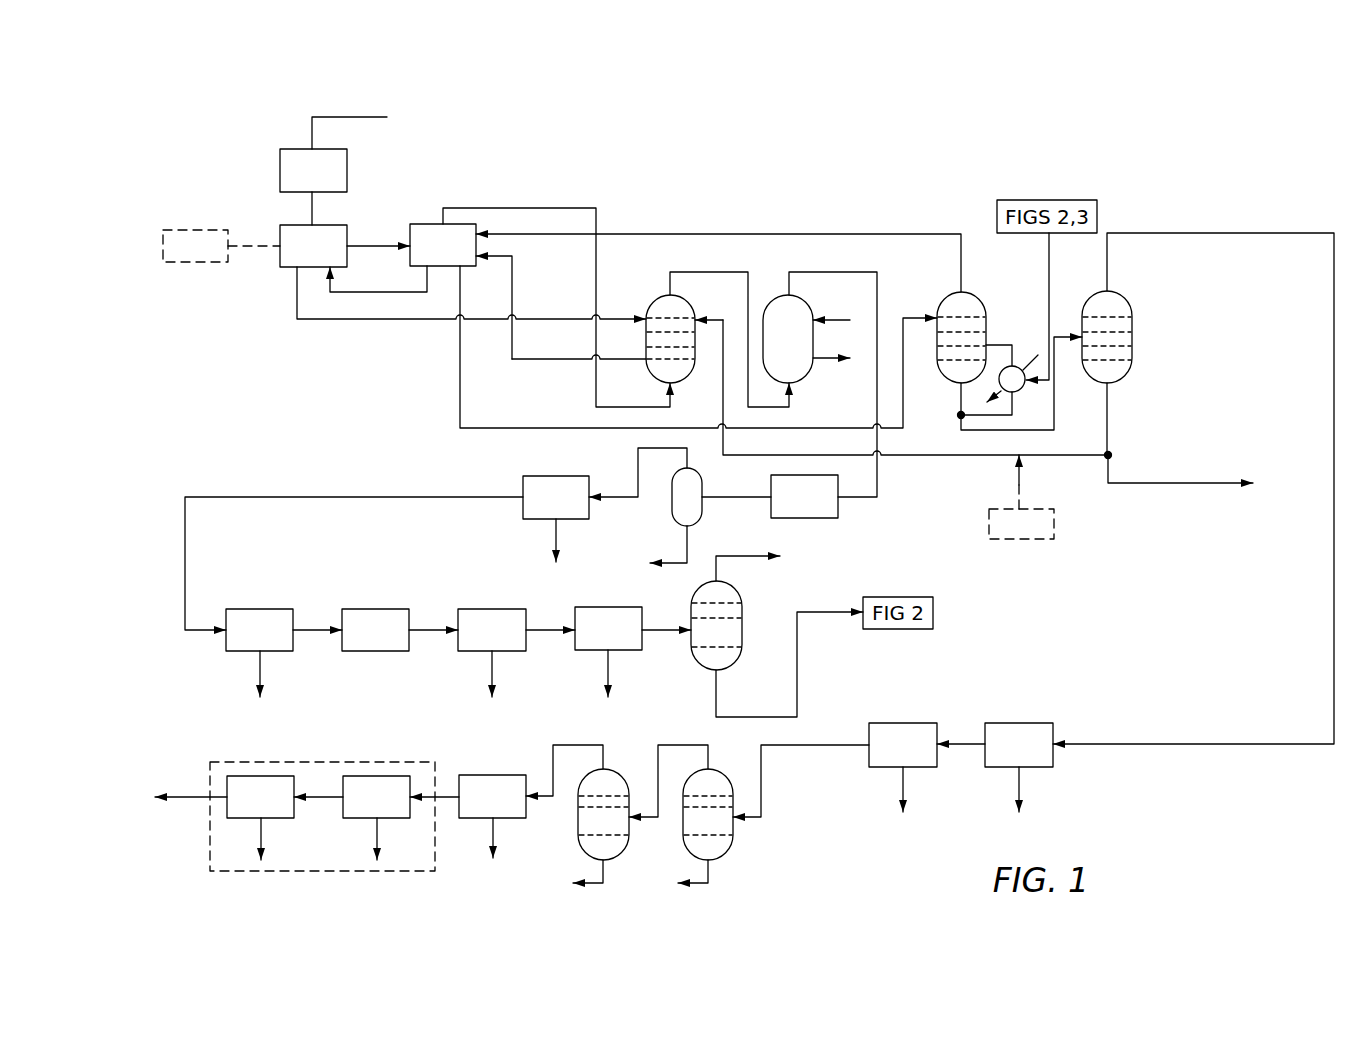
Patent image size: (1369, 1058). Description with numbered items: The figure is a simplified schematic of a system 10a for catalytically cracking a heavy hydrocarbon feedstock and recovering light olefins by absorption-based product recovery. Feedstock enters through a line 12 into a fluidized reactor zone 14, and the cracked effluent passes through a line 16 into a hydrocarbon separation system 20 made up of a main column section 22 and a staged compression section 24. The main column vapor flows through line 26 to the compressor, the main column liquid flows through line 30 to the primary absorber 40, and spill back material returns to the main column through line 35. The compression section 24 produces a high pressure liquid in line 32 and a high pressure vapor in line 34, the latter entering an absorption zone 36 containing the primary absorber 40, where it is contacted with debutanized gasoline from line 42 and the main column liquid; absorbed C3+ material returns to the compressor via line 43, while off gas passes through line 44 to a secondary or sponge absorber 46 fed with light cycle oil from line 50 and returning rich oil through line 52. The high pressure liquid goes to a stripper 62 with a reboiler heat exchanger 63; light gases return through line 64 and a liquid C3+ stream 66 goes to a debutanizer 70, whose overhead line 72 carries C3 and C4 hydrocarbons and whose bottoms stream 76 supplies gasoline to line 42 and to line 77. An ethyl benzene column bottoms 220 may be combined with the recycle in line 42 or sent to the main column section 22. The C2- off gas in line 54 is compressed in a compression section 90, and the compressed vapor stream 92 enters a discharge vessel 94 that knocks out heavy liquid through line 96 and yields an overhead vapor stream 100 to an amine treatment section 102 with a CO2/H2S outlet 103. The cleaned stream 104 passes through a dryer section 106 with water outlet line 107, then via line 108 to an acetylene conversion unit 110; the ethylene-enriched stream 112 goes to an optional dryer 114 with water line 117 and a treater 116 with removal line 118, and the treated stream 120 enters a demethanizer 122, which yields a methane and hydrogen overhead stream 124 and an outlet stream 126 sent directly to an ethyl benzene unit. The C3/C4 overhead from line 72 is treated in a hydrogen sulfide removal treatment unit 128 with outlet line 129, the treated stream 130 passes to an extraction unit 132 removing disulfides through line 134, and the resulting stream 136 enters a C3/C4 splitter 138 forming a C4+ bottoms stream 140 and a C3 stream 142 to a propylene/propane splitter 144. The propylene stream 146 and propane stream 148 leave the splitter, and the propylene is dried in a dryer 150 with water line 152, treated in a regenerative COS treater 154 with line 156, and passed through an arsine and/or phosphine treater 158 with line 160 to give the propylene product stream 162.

The system 10a is at (1236, 147).
The line 12 is at (363, 119).
The fluidized reactor zone 14 is at (313, 189).
The line 16 is at (316, 212).
The hydrocarbon separation system 20 is at (330, 357).
The main column section 22 is at (312, 262).
The staged compression section 24 is at (446, 262).
The line 26 is at (384, 244).
The line 30 is at (297, 308).
The line 32 is at (460, 354).
The line 34 is at (596, 389).
The line 35 is at (404, 290).
The absorption zone 36 is at (693, 200).
The primary absorber 40 is at (658, 357).
The line 42 is at (948, 459).
The line 43 is at (512, 357).
The line 44 is at (685, 270).
The secondary or sponge absorber 46 is at (776, 359).
The line 50 is at (838, 320).
The line 52 is at (840, 358).
The line 54 is at (803, 270).
The stripper 62 is at (949, 357).
The reboiler heat exchanger 63 is at (1019, 362).
The line 64 is at (782, 233).
The liquid C3+ stream 66 is at (1054, 412).
The debutanizer 70 is at (1095, 357).
The line 72 is at (1222, 233).
The bottoms stream 76 is at (1109, 416).
The line 77 is at (1180, 483).
The compression section 90 is at (792, 509).
The compressed vapor stream 92 is at (735, 502).
The discharge vessel 94 is at (676, 509).
The line 96 is at (687, 545).
The overhead vapor stream 100 is at (638, 449).
The amine treatment section 102 is at (538, 509).
The CO2/H2S outlet 103 is at (556, 538).
The stream 104 is at (352, 495).
The dryer section 106 is at (242, 643).
The water outlet line 107 is at (258, 669).
The line 108 is at (318, 628).
The acetylene conversion unit 110 is at (357, 643).
The ethylene-enriched process stream 112 is at (433, 628).
The dryer 114 is at (474, 643).
The treater 116 is at (590, 642).
The line 117 is at (490, 669).
The line 118 is at (606, 669).
The treated stream 120 is at (666, 627).
The demethanizer 122 is at (698, 643).
The overhead stream 124 is at (765, 556).
The demethanizer outlet stream 126 is at (800, 671).
The hydrogen sulfide removal treatment unit 128 is at (1001, 757).
The line 129 is at (1021, 782).
The treated stream 130 is at (964, 738).
The extraction unit 132 is at (885, 757).
The line 134 is at (905, 782).
The stream 136 is at (815, 746).
The C3/C4 splitter 138 is at (690, 829).
The bottoms stream 140 is at (711, 873).
The stream 142 is at (665, 745).
The propylene/propane splitter 144 is at (585, 829).
The propylene stream 146 is at (560, 745).
The propane stream 148 is at (606, 873).
The dryer 150 is at (475, 809).
The line 152 is at (496, 833).
The regenerative COS treater 154 is at (359, 810).
The line 156 is at (380, 833).
The arsine and/or phosphine treater 158 is at (243, 810).
The line 160 is at (264, 833).
The propylene product stream 162 is at (185, 795).
The ethyl benzene column bottoms 220 is at (256, 238).